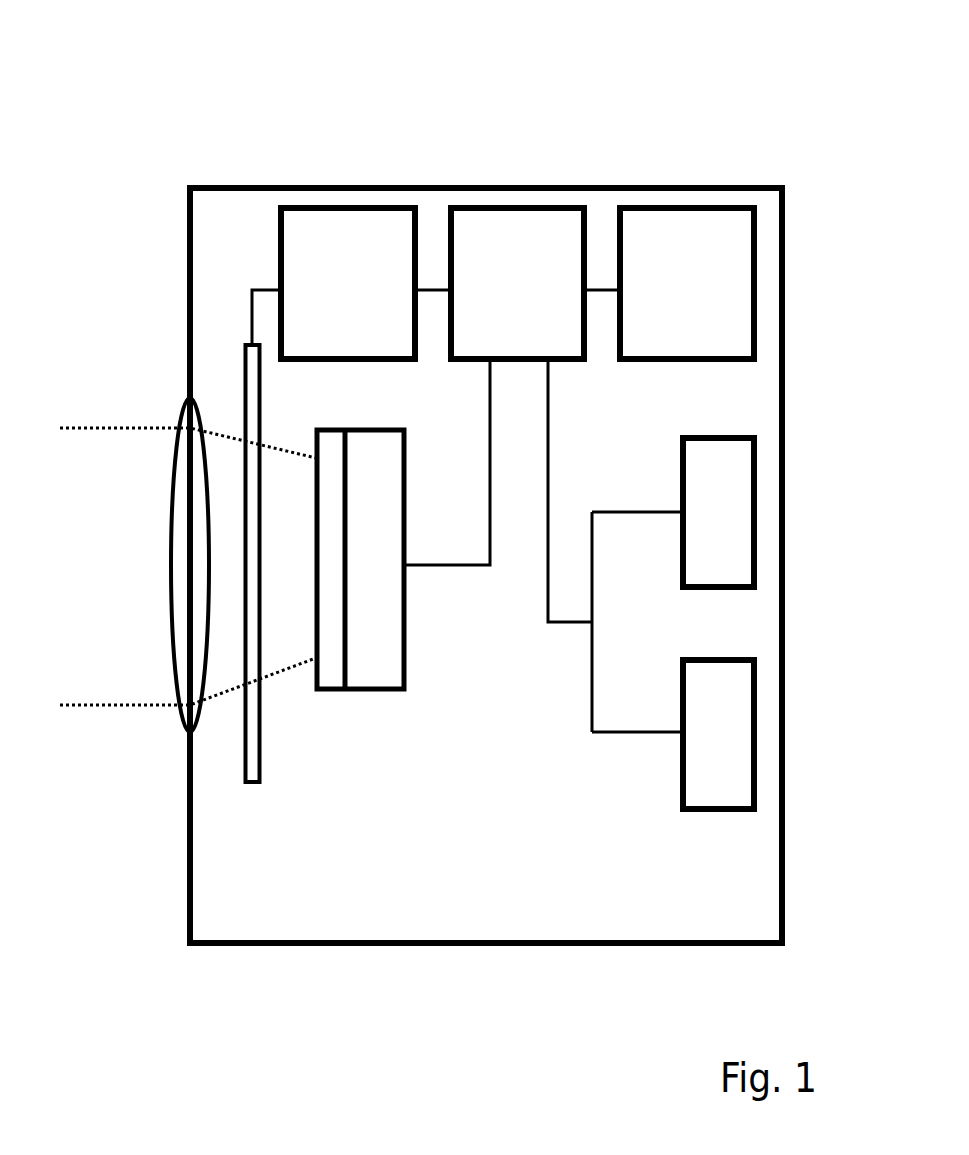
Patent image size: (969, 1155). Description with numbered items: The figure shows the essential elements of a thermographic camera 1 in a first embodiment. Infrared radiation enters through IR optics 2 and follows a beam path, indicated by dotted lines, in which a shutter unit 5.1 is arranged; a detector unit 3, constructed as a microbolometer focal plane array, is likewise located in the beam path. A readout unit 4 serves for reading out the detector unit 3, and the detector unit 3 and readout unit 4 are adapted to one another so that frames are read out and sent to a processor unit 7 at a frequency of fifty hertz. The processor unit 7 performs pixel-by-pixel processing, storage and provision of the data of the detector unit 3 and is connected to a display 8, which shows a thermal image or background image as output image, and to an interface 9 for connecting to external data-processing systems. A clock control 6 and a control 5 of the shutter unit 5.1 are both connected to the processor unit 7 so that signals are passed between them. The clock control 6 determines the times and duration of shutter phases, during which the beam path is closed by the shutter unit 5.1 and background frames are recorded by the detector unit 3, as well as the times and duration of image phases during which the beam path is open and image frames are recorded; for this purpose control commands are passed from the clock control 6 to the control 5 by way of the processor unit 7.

The thermographic camera 1 is at (491, 66).
The IR optics 2 is at (183, 534).
The detector unit 3 is at (322, 683).
The readout unit 4 is at (382, 682).
The control 5 is at (350, 242).
The shutter unit 5.1 is at (248, 376).
The clock control 6 is at (687, 243).
The processor unit 7 is at (512, 242).
The display 8 is at (738, 520).
The interface 9 is at (738, 748).